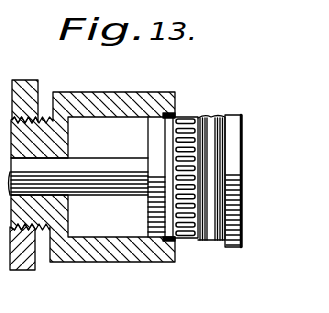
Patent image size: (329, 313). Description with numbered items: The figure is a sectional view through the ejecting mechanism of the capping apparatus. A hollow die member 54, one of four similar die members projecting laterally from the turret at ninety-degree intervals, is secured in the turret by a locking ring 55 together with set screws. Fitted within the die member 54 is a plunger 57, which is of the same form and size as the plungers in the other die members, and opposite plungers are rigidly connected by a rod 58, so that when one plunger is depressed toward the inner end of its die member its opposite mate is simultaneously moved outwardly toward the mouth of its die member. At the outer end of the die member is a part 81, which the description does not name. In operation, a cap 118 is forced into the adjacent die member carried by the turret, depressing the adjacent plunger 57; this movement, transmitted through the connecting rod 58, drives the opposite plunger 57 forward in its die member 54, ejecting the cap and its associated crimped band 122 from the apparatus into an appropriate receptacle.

The locking ring 55 is at (27, 95).
The die member 54 is at (97, 103).
The end wall 81 is at (163, 112).
The rod 58 is at (107, 178).
The plunger 57 is at (153, 225).
The cap 118 is at (202, 225).
The band 122 is at (230, 141).